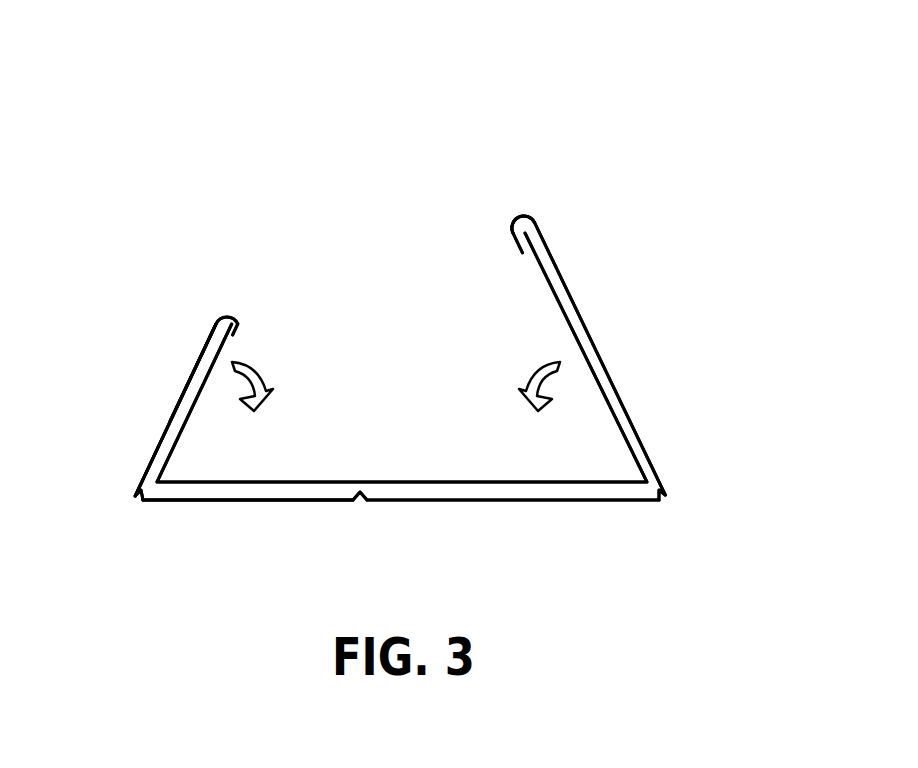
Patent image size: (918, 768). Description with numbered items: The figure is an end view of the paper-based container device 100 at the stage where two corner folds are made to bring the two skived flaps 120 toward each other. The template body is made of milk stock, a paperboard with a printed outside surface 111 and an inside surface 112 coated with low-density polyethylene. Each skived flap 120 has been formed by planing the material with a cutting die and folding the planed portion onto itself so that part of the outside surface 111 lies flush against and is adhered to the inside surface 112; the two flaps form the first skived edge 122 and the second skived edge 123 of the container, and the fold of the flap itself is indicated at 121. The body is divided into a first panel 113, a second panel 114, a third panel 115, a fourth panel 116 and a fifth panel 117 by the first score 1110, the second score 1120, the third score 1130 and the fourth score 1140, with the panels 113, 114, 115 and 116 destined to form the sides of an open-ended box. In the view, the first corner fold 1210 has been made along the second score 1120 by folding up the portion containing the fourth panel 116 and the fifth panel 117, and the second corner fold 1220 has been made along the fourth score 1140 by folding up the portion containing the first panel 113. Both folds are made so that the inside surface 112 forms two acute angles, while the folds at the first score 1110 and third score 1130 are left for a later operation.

The container device 100 is at (289, 107).
The outside surface 111 is at (150, 460).
The inside surface 112 is at (203, 394).
The first panel 113 is at (604, 373).
The second panel 114 is at (488, 493).
The third panel 115 is at (238, 490).
The fourth panel 116 is at (177, 423).
The fifth panel 117 is at (202, 354).
The skived flap 120 is at (223, 306).
The folded lip 121 is at (211, 333).
The first skived edge 122 is at (238, 313).
The second skived edge 123 is at (518, 216).
The first score 1110 is at (207, 367).
The second score 1120 is at (143, 492).
The third score 1130 is at (358, 500).
The fourth score 1140 is at (665, 495).
The first corner fold 1210 is at (262, 377).
The second corner fold 1220 is at (533, 383).